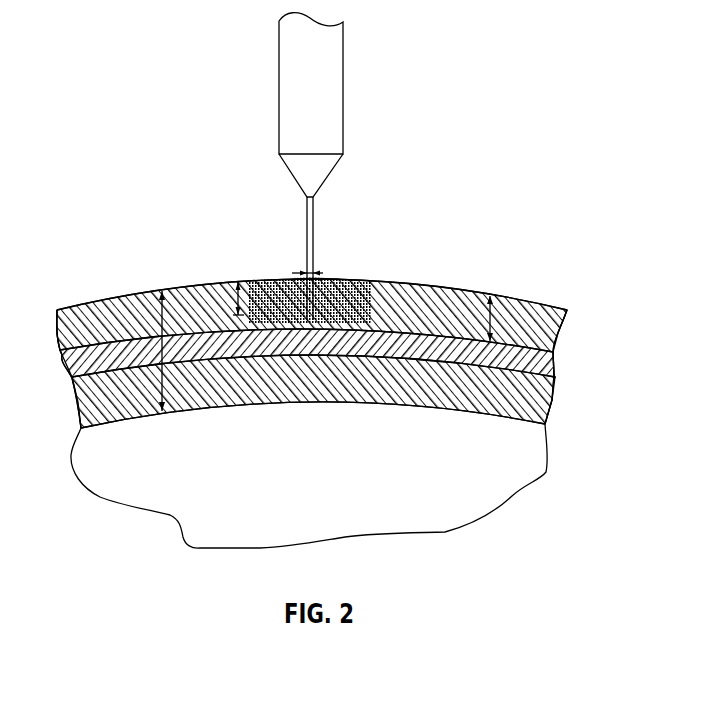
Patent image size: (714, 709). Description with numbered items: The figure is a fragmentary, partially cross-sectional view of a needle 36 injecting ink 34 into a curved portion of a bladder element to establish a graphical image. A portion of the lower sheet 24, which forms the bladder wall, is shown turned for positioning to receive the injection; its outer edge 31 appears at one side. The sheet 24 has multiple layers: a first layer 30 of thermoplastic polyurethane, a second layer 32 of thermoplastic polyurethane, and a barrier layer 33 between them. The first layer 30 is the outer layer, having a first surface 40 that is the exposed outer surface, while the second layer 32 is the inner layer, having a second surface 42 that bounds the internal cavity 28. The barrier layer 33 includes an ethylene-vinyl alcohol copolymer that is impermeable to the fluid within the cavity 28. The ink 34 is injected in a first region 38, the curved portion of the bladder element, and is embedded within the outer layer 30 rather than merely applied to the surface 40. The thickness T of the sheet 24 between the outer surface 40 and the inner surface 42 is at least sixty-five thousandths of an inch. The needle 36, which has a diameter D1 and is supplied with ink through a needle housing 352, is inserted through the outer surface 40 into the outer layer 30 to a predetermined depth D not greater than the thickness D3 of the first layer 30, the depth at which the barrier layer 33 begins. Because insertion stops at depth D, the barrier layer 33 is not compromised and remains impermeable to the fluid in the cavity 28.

The needle housing 352 is at (279, 112).
The ink 34 is at (285, 295).
The pin diameter D1 is at (318, 271).
The needle 36 is at (328, 274).
The first surface 40 is at (417, 281).
The first layer 30 is at (445, 292).
The thickness of the first layer D3 is at (493, 302).
The lower sheet 24 is at (543, 303).
The edge of panel 31 is at (93, 303).
The thickness of the sheet T is at (152, 322).
The predetermined depth D is at (234, 290).
The barrier layer 33 is at (548, 367).
The second layer 32 is at (546, 412).
The second surface 42 is at (437, 411).
The first region 38 is at (320, 325).
The internal cavity 28 is at (298, 489).